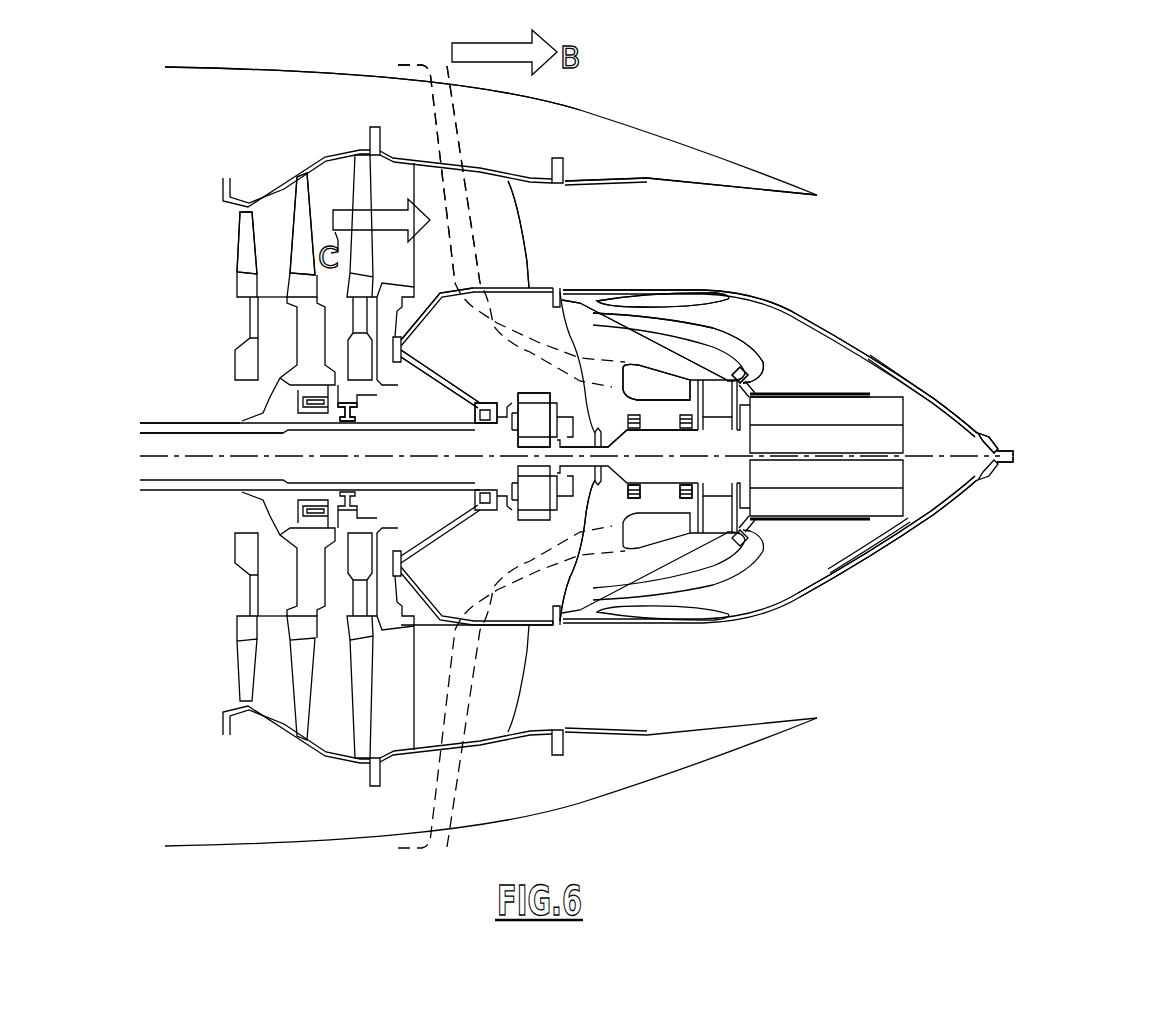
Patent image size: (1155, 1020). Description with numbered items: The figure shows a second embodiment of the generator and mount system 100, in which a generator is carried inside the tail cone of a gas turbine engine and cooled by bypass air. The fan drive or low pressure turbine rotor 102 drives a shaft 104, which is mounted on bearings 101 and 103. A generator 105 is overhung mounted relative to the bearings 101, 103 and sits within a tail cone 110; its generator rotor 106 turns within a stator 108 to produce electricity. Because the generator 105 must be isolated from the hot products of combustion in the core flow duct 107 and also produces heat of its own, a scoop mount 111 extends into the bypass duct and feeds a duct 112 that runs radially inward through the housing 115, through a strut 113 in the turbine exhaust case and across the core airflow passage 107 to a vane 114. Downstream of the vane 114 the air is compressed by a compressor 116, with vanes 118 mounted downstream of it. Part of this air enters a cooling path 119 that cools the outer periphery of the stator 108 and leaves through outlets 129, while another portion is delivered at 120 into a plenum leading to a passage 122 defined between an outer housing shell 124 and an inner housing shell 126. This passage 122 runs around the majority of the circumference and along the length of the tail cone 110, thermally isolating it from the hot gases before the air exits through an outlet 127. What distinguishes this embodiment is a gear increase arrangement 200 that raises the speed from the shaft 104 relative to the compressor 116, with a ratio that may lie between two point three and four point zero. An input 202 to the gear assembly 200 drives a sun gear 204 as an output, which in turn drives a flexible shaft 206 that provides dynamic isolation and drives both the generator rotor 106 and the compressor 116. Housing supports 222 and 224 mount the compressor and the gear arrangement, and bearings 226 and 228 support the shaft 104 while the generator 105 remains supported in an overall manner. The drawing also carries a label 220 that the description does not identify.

The generator and mount system 100 is at (985, 179).
The bearing 101 is at (362, 408).
The fan drive or low pressure turbine rotor 102 is at (242, 291).
The bearing 103 is at (480, 440).
The shaft 104 is at (190, 430).
The generator 105 is at (935, 398).
The generator rotor 106 is at (890, 437).
The core flow duct 107 is at (797, 245).
The stator 108 is at (893, 500).
The tail cone 110 is at (922, 395).
The scoop mount 111 is at (398, 66).
The duct 112 is at (438, 127).
The strut 113 is at (505, 228).
The vane 114 is at (648, 387).
The housing 115 is at (308, 72).
The compressor 116 is at (707, 410).
The vanes 118 is at (817, 330).
The cooling path 119 is at (827, 383).
The air delivery point 120 is at (576, 615).
The passage 122 is at (863, 570).
The outer housing shell 124 is at (830, 592).
The inner housing shell 126 is at (858, 576).
The outlet 127 is at (1013, 452).
The outlets 129 is at (978, 428).
The gear increase arrangement 200 is at (490, 385).
The input 202 is at (530, 393).
The sun gear 204 is at (557, 456).
The flexible shaft 206 is at (569, 588).
The combustion section 220 is at (645, 290).
The housing support 222 is at (668, 347).
The housing support 224 is at (727, 378).
The bearing 226 is at (633, 500).
The bearing 228 is at (684, 500).